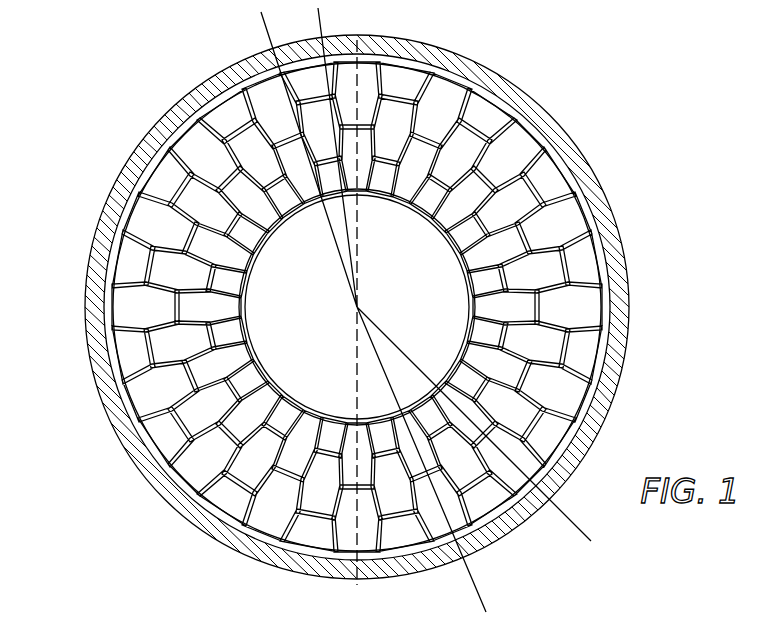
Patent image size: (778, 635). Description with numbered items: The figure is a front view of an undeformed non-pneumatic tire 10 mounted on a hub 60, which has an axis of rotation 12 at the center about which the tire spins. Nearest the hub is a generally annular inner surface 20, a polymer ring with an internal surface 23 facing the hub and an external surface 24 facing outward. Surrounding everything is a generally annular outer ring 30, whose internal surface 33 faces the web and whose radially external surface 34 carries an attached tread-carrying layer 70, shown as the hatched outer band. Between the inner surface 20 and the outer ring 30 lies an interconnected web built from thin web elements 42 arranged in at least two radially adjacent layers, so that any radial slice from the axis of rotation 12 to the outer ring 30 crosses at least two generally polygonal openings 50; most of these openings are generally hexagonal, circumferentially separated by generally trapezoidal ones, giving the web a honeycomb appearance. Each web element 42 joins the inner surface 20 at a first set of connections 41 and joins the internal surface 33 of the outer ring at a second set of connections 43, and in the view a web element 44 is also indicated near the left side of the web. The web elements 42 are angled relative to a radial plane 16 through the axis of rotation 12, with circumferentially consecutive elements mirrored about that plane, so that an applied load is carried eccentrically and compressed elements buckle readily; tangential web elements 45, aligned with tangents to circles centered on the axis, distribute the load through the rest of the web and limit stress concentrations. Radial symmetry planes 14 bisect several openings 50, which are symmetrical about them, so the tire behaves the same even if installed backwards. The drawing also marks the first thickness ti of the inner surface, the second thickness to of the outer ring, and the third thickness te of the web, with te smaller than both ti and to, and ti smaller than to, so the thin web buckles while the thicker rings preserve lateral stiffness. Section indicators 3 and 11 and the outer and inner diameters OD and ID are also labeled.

The non-pneumatic tire 10 is at (578, 86).
The axis of rotation 12 is at (352, 309).
The radial symmetry planes 14 is at (583, 533).
The radial plane 16 is at (270, 16).
The generally annular inner surface 20 is at (428, 225).
The internal surface 23 is at (408, 210).
The external surface 24 is at (404, 220).
The generally annular outer ring 30 is at (607, 203).
The internal surface 33 is at (600, 312).
The radially external surface 34 is at (630, 275).
The first set of connections 41 is at (313, 417).
The web elements 42 is at (190, 406).
The second set of connections 43 is at (312, 560).
The spoke wall 44 is at (200, 252).
The tangential web elements 45 is at (575, 424).
The generally polygonal openings 50 is at (194, 418).
The hub 60 is at (314, 280).
The tread-carrying layer 70 is at (145, 145).
The section line 3- 3 is at (384, 17).
The section line 11- 11 is at (138, 335).
The outer diameter OD is at (283, 563).
The inner diameter ID is at (245, 395).
The second thickness to is at (553, 178).
The third thickness te is at (512, 240).
The first thickness ti is at (468, 262).